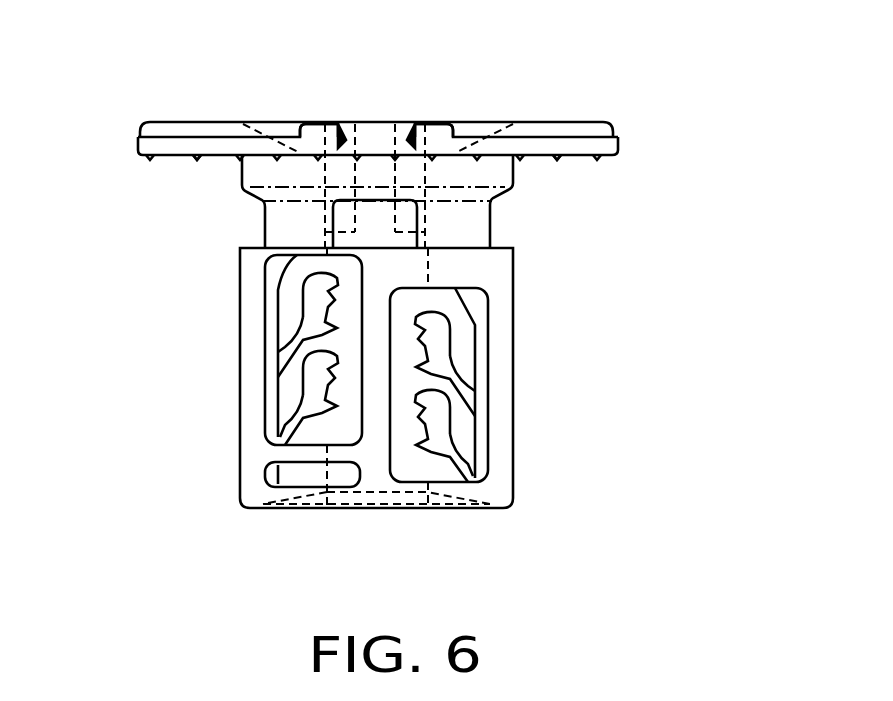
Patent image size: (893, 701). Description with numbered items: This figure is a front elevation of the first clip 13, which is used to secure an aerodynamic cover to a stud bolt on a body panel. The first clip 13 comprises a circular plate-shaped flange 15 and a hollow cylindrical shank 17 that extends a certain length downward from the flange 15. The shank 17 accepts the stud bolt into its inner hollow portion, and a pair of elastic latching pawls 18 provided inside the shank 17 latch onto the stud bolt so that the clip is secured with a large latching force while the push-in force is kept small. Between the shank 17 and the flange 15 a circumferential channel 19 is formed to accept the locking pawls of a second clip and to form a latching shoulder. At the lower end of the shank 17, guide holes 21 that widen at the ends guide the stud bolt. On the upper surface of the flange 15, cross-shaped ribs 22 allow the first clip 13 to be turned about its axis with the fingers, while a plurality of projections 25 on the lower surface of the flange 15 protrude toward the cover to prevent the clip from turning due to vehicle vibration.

The first clip 13 is at (645, 134).
The flange 15 is at (145, 159).
The shank 17 is at (513, 379).
The elastic latching pawls 18 is at (315, 308).
The circumferential channel 19 is at (265, 228).
The guide holes 21 is at (327, 508).
The cross-shaped ribs 22 is at (470, 122).
The projections 25 is at (197, 162).